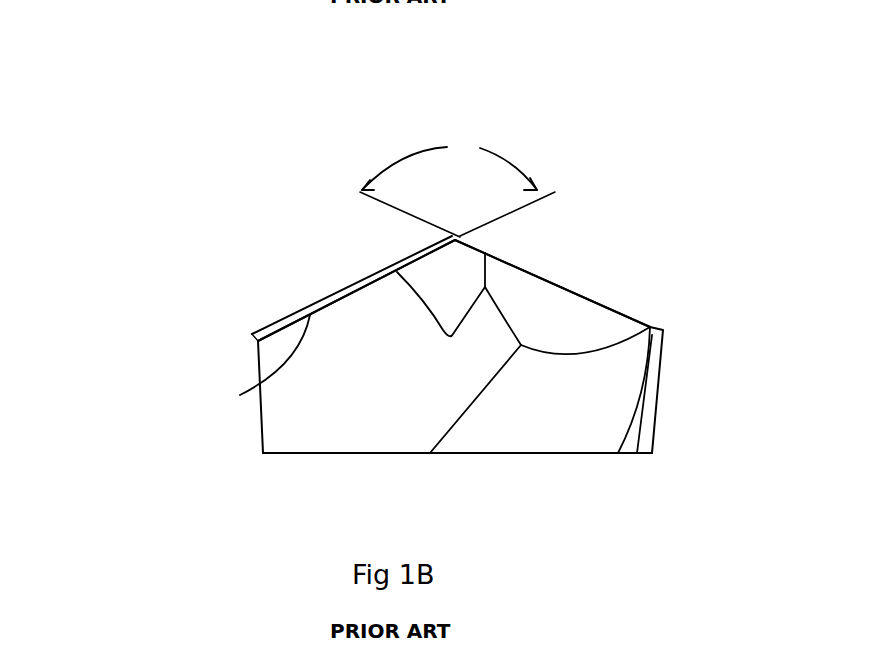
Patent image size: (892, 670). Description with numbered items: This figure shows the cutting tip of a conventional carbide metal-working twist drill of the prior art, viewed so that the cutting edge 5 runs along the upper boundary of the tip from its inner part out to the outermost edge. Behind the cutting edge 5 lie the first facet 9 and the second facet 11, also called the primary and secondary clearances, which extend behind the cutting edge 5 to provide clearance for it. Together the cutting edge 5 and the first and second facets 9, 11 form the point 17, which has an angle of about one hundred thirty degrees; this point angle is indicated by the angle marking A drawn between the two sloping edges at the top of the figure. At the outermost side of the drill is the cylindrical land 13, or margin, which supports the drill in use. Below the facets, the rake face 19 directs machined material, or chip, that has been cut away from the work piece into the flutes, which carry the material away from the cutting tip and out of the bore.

The cutting edge 5 is at (250, 388).
The first facet 9 is at (362, 283).
The second facet 11 is at (577, 327).
The cylindrical land 13 is at (250, 353).
The point 17 is at (480, 241).
The rake face 19 is at (348, 377).
The included angle A is at (467, 147).